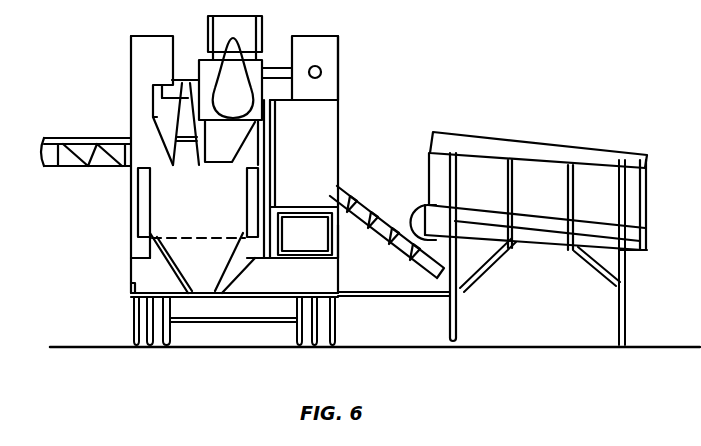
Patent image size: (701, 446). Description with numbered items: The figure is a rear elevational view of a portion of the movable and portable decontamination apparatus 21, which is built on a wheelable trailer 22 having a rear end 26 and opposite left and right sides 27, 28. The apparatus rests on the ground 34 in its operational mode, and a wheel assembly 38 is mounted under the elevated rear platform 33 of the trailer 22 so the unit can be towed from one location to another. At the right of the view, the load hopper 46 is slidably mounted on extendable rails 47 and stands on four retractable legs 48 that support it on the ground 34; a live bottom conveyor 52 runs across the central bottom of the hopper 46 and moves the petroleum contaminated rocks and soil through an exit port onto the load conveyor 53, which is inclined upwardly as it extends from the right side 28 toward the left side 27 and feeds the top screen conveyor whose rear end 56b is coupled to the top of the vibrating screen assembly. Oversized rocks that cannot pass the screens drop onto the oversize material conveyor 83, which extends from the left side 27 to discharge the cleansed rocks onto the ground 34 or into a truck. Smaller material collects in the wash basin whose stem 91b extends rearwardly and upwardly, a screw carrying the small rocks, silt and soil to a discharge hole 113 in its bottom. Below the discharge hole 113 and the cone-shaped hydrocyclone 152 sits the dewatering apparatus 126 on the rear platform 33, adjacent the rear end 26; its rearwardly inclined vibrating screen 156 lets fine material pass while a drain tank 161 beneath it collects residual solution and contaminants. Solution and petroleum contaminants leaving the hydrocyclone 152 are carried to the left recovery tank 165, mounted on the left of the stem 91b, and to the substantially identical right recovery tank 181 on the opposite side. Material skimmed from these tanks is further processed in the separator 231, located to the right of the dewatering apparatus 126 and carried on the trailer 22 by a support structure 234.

The decontamination apparatus 21 is at (575, 120).
The trailer 22 is at (131, 272).
The rear end 26 is at (284, 291).
The left side 27 is at (133, 283).
The right side 28 is at (342, 294).
The rear platform 33 is at (305, 234).
The ground 34 is at (650, 312).
The wheel assembly 38 is at (142, 347).
The load hopper 46 is at (647, 162).
The extendable rails 47 is at (430, 292).
The retractable legs 48 is at (456, 303).
The live bottom conveyor 52 is at (408, 207).
The load conveyor 53 is at (354, 195).
The rear end of top screen conveyor 56b is at (265, 40).
The oversize material conveyor 83 is at (80, 137).
The stem 91b is at (203, 78).
The discharge hole 113 is at (153, 183).
The dewatering apparatus 126 is at (139, 190).
The hydrocyclone 152 is at (153, 117).
The vibrating screen 156 is at (188, 217).
The drain tank 161 is at (143, 251).
The left recovery tank 165 is at (147, 48).
The right recovery tank 181 is at (333, 60).
The separator 231 is at (322, 135).
The support structure 234 is at (339, 238).